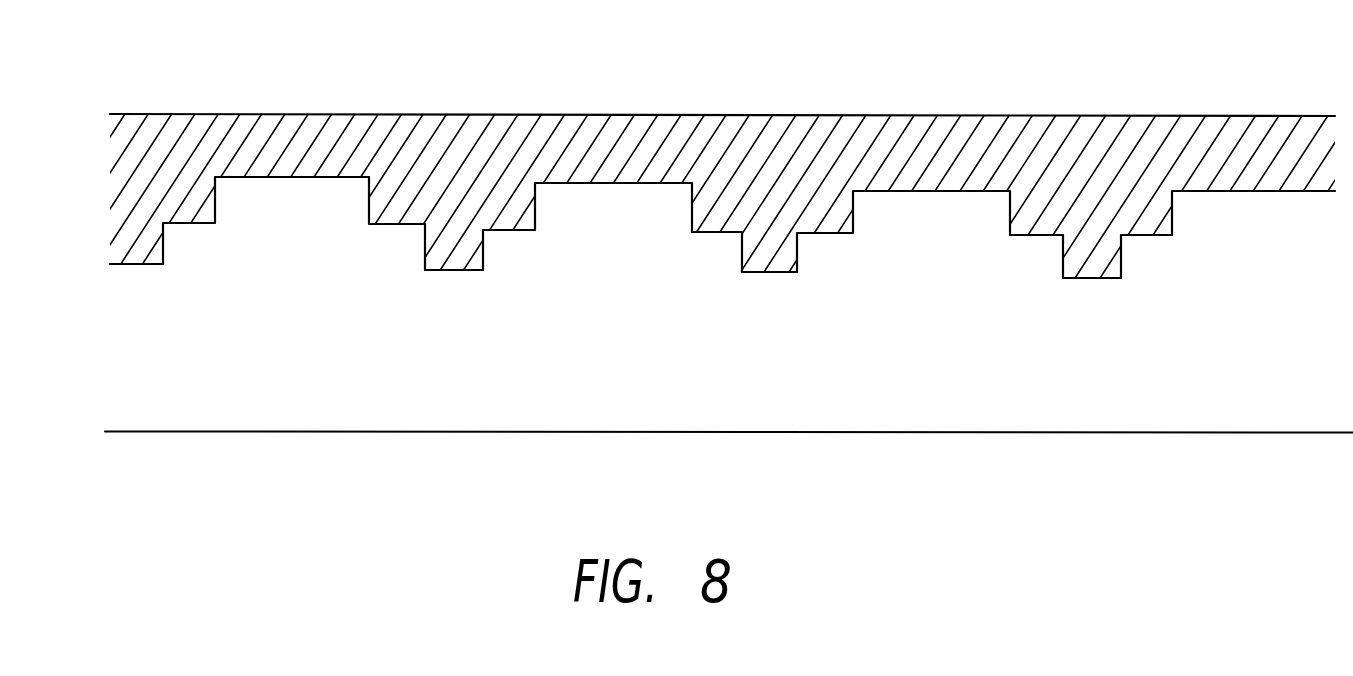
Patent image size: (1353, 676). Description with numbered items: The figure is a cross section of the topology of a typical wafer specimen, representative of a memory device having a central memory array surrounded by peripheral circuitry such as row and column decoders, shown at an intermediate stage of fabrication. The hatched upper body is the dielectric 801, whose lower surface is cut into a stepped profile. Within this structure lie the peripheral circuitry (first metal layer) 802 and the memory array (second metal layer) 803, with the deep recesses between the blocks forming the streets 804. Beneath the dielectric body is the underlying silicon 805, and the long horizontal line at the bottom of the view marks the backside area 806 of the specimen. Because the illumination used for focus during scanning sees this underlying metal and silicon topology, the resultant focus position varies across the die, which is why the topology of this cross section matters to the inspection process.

The dielectric 801 is at (225, 145).
The peripheral circuitry (first metal layer) 802 is at (413, 217).
The memory array (second metal layer) 803 is at (647, 177).
The streets 804 is at (773, 332).
The underlying silicon 805 is at (208, 388).
The backside area 806 is at (729, 478).